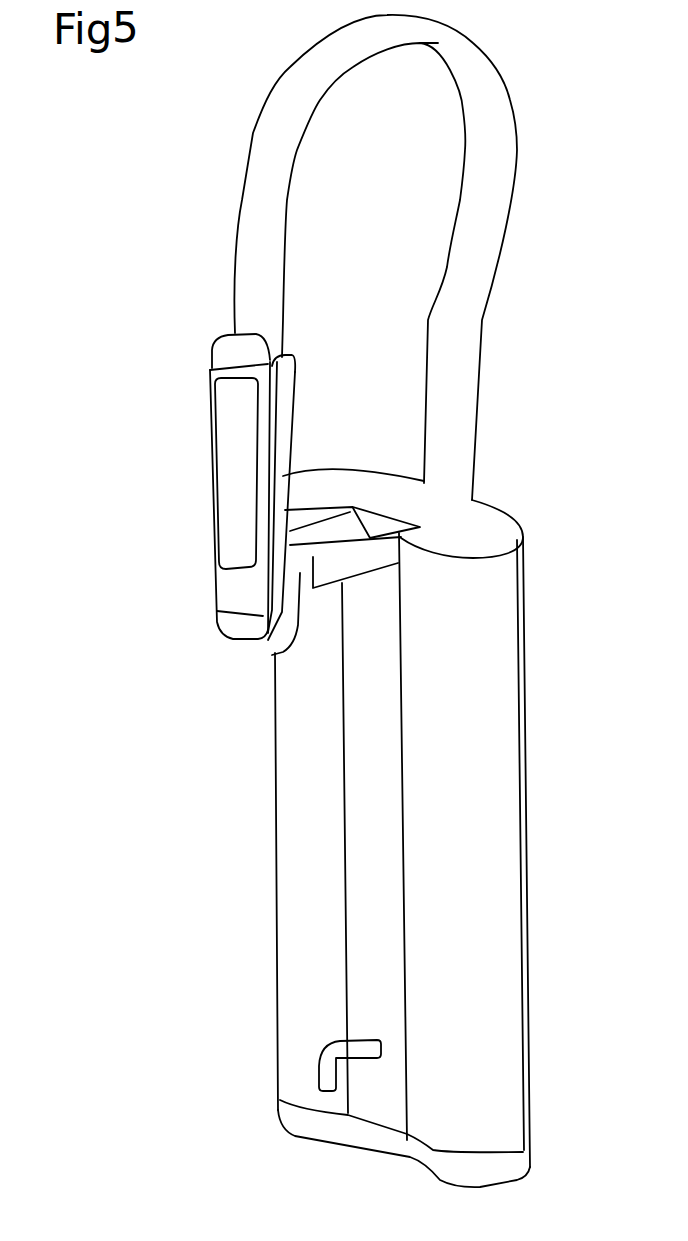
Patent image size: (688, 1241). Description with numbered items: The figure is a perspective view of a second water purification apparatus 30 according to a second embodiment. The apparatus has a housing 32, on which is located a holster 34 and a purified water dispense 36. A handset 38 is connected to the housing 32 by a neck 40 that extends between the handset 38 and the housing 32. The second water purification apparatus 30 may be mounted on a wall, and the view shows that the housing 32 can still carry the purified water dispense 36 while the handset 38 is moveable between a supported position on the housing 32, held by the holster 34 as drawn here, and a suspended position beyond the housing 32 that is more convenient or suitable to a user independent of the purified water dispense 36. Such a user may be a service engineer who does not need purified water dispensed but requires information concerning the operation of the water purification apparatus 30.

The second water purification apparatus 30 is at (170, 157).
The housing 32 is at (527, 650).
The holster 34 is at (283, 654).
The purified water dispense 36 is at (317, 1065).
The handset 38 is at (190, 494).
The neck 40 is at (456, 86).